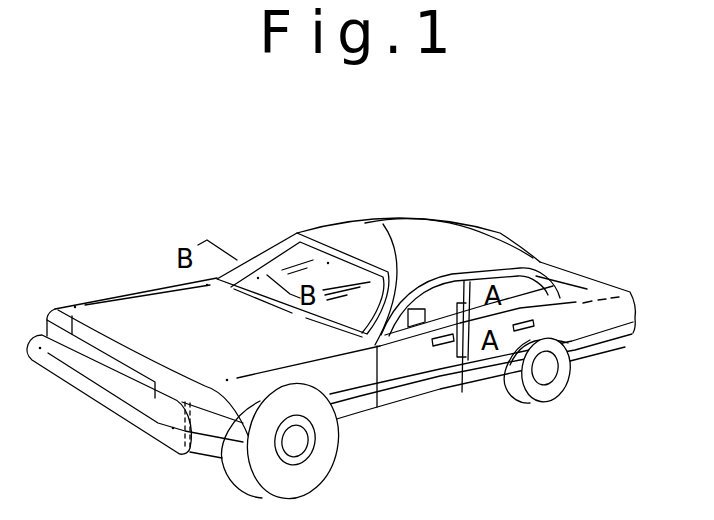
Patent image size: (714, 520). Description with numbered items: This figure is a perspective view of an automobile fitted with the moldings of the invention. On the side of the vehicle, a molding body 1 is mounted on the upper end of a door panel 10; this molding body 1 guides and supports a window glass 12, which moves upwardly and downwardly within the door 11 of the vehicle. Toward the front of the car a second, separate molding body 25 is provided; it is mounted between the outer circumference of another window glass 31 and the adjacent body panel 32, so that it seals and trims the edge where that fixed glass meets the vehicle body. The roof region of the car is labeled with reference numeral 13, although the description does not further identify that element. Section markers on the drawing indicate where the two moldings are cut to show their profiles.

The molding body 1 is at (407, 333).
The door panel 10 is at (418, 333).
The door 11 is at (442, 363).
The window glass 12 is at (447, 298).
The roof 13 is at (353, 233).
The molding body 25 is at (283, 275).
The window glass 31 is at (282, 254).
The body panel 32 is at (383, 224).